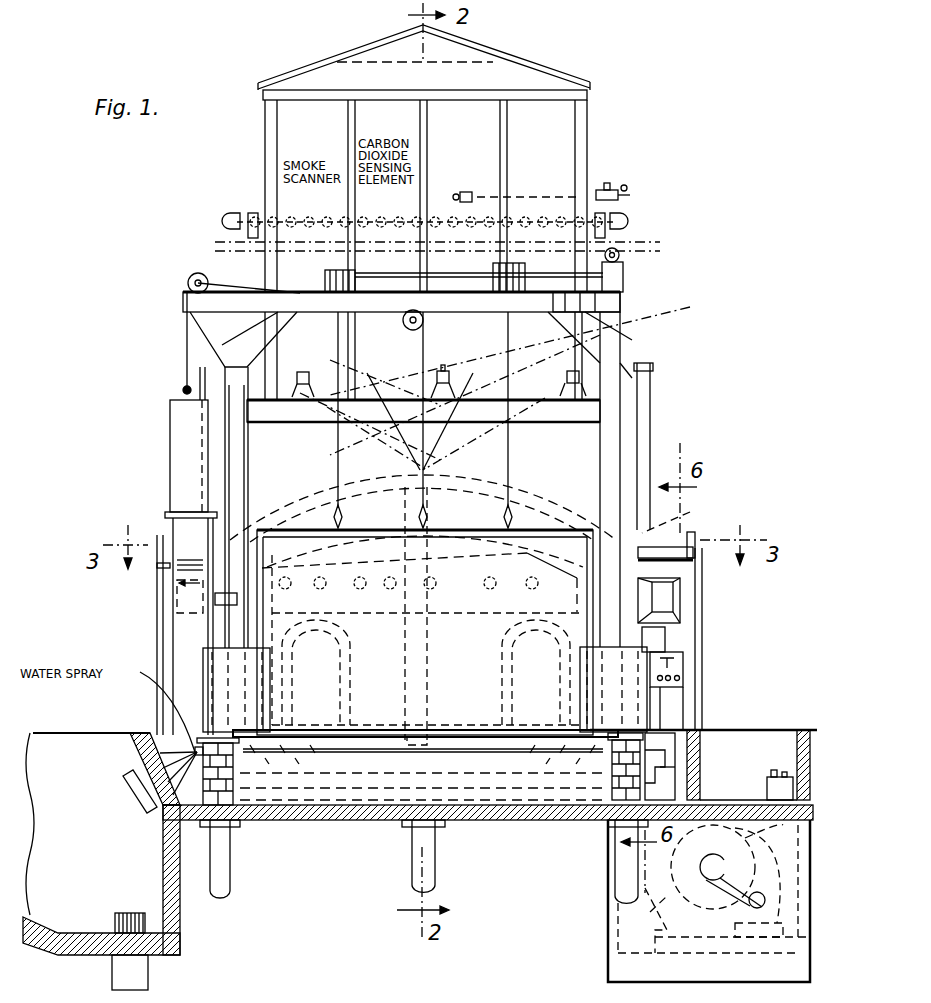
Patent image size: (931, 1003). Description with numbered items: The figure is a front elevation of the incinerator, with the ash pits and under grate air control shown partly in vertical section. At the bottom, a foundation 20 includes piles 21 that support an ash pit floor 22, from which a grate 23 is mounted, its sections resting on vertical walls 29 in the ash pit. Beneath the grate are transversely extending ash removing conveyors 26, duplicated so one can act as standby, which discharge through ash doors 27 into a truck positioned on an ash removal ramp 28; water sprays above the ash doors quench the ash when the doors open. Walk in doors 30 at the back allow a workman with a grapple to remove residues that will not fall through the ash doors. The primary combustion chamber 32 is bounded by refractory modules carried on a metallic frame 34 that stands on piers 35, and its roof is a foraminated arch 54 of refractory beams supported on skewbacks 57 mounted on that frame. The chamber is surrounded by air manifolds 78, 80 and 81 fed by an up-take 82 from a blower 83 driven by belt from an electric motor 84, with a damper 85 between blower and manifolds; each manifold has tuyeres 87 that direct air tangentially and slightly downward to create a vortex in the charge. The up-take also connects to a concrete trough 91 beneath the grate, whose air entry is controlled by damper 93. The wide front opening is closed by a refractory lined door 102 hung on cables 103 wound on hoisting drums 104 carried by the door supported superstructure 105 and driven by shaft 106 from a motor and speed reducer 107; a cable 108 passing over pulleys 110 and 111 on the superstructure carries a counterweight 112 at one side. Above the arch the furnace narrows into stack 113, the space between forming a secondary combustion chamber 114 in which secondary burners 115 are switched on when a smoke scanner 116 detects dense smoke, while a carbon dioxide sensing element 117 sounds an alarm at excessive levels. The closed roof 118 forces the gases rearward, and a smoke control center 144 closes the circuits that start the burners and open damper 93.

The foundation 20 is at (633, 777).
The piles 21 is at (435, 878).
The ash pit floor 22 is at (532, 820).
The grate 23 is at (383, 752).
The ash removing conveyors 26 is at (363, 780).
The ash doors 27 is at (145, 797).
The ash removal ramp 28 is at (40, 930).
The vertical walls 29 is at (193, 753).
The walk in doors 30 is at (345, 660).
The primary combustion chamber 32 is at (422, 616).
The metallic frame 34 is at (630, 395).
The piers 35 is at (213, 750).
The foraminated arch 54 is at (443, 392).
The skewbacks 57 is at (679, 515).
The air manifold 78 is at (185, 592).
The air manifold 80 is at (557, 553).
The air manifold 81 is at (657, 587).
The up-take 82 is at (677, 635).
The blower 83 is at (665, 905).
The electric motor 84 is at (757, 858).
The damper 85 is at (738, 652).
The ports or tuyeres 87 is at (530, 588).
The concrete trough 91 is at (690, 753).
The damper 93 is at (670, 753).
The refractory lined door 102 is at (423, 543).
The cables 103 is at (523, 348).
The hoisting drums 104 is at (523, 268).
The door supported superstructure 105 is at (622, 303).
The shaft 106 is at (425, 264).
The motor and speed reducer 107 is at (625, 274).
The cable 108 is at (423, 325).
The pulley 110 is at (401, 323).
The pulley 111 is at (200, 274).
The counterweight 112 is at (173, 440).
The stack 113 is at (282, 350).
The secondary combustion chamber 114 is at (595, 446).
The secondary burners 115 is at (447, 372).
The smoke scanner 116 is at (303, 222).
The carbon dioxide sensing element 117 is at (420, 178).
The roof 118 is at (520, 54).
The smoke control center 144 is at (683, 665).